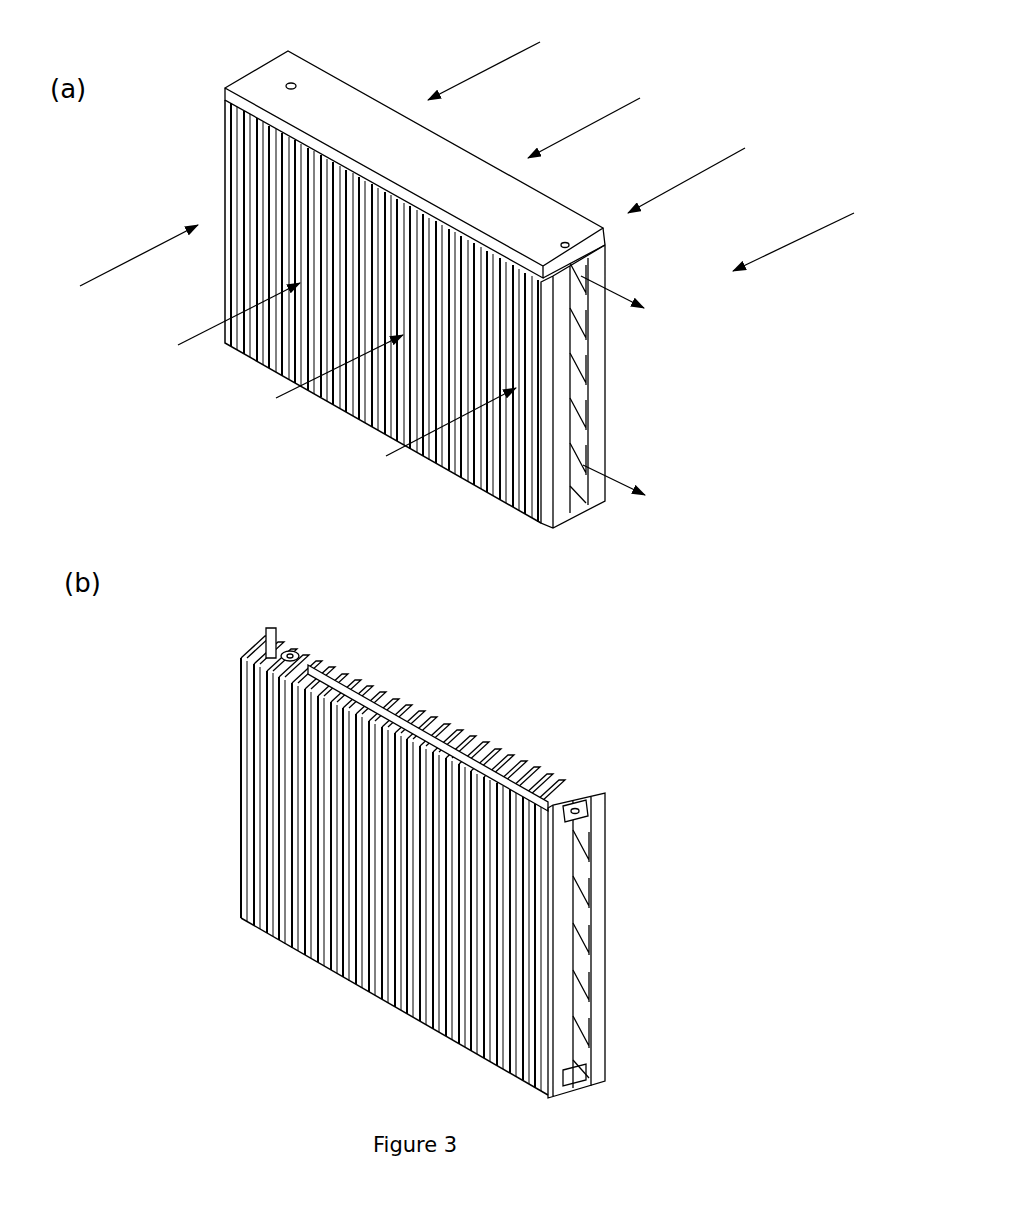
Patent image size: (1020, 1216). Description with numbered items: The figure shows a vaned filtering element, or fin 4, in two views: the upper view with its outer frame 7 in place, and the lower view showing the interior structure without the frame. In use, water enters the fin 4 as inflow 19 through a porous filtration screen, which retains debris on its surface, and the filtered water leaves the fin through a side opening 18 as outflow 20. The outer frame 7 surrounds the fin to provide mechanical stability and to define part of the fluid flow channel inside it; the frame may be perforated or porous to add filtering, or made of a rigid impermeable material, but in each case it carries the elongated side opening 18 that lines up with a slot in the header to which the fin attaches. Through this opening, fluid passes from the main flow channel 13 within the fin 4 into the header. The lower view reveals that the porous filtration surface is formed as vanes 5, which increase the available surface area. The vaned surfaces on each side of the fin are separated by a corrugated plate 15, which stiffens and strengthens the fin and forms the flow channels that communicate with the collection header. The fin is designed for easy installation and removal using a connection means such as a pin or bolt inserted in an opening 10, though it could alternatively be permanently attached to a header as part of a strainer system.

The vaned fin 4 is at (237, 50).
The outer frame 7 is at (330, 78).
The inflow 19 is at (467, 249).
The side opening 18 is at (573, 335).
The outflow 20 is at (580, 382).
The vanes 5 is at (255, 658).
The main flow channel 13 is at (437, 703).
The opening 10 is at (576, 808).
The corrugated plate 15 is at (578, 920).